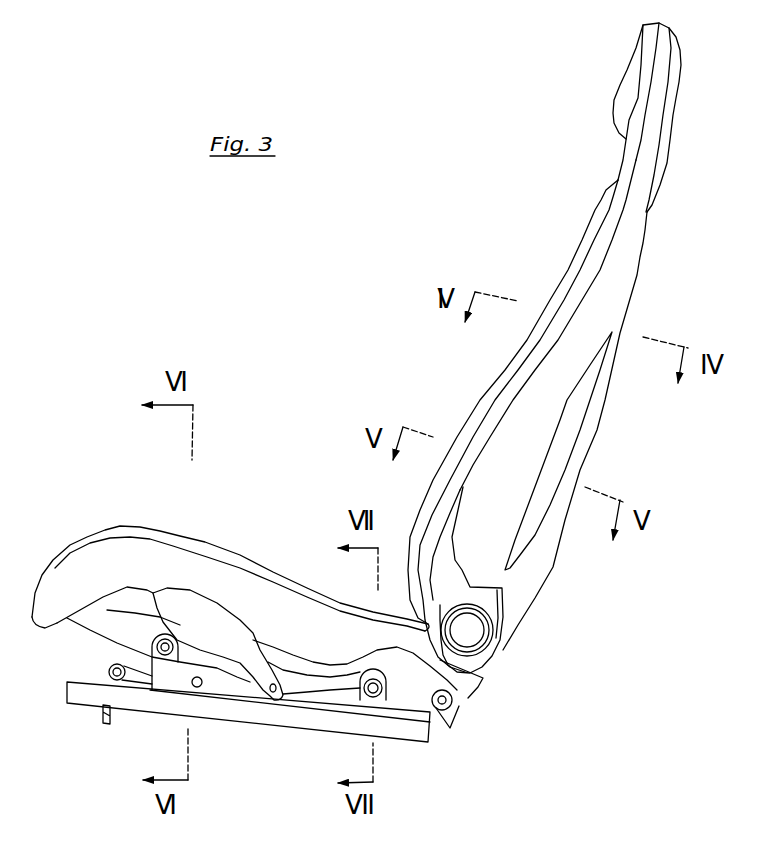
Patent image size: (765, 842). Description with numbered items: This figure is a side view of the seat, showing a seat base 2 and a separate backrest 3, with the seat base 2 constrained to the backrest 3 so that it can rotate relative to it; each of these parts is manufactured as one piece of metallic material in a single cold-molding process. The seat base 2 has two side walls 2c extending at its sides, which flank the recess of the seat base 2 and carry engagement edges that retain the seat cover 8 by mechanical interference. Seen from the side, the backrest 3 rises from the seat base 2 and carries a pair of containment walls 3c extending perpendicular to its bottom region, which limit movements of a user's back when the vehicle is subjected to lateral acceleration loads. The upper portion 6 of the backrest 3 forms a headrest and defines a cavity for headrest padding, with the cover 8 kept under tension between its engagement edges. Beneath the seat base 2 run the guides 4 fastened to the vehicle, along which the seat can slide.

The seat base 2 is at (245, 680).
The side walls 2c is at (218, 665).
The backrest 3 is at (545, 429).
The containment walls 3c is at (488, 512).
The guides 4 is at (147, 713).
The upper portion 6 is at (608, 107).
The seat cover 8 is at (480, 397).